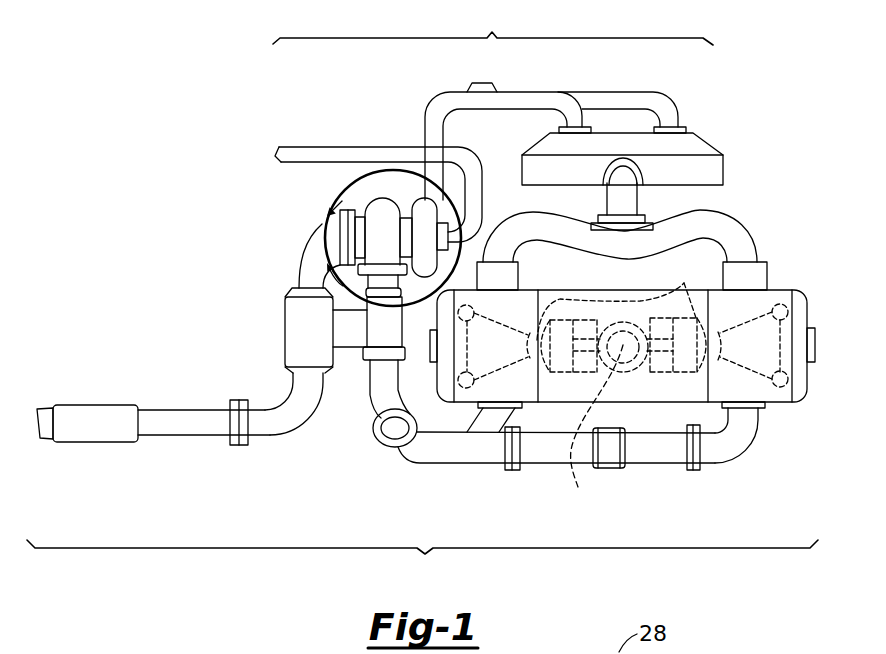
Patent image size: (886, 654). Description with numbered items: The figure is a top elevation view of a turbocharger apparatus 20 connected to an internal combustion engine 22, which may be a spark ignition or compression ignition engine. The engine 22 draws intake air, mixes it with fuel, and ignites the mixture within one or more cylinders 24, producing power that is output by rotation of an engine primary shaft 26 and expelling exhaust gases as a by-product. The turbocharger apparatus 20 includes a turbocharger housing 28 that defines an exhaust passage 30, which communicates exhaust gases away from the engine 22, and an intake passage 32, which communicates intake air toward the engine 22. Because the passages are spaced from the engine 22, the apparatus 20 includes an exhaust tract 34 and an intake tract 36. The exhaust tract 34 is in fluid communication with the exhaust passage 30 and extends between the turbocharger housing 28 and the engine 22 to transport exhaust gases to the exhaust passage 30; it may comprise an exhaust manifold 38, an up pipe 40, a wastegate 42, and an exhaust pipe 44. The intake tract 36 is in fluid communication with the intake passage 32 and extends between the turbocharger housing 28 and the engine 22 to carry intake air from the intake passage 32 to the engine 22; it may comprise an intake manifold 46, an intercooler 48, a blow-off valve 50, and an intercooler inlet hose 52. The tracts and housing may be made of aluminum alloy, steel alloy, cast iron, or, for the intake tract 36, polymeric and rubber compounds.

The turbocharger apparatus 20 is at (205, 71).
The internal combustion engine 22 is at (622, 389).
The cylinders 24 is at (621, 315).
The engine primary shaft 26 is at (591, 431).
The turbocharger housing 28 is at (365, 201).
The exhaust passage 30 is at (386, 214).
The intake passage 32 is at (423, 212).
The exhaust tract 34 is at (422, 563).
The intake tract 36 is at (493, 25).
The exhaust manifold 38 is at (443, 453).
The up pipe 40 is at (380, 372).
The wastegate 42 is at (348, 333).
The exhaust pipe 44 is at (162, 407).
The intake manifold 46 is at (720, 227).
The intercooler 48 is at (693, 145).
The blow-off valve 50 is at (470, 82).
The intercooler inlet hose 52 is at (538, 100).